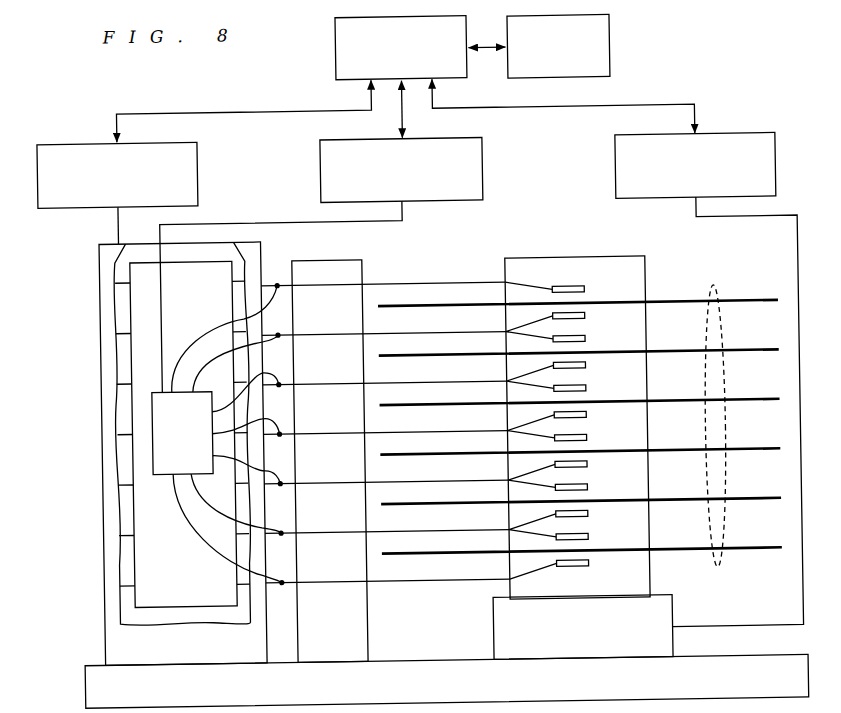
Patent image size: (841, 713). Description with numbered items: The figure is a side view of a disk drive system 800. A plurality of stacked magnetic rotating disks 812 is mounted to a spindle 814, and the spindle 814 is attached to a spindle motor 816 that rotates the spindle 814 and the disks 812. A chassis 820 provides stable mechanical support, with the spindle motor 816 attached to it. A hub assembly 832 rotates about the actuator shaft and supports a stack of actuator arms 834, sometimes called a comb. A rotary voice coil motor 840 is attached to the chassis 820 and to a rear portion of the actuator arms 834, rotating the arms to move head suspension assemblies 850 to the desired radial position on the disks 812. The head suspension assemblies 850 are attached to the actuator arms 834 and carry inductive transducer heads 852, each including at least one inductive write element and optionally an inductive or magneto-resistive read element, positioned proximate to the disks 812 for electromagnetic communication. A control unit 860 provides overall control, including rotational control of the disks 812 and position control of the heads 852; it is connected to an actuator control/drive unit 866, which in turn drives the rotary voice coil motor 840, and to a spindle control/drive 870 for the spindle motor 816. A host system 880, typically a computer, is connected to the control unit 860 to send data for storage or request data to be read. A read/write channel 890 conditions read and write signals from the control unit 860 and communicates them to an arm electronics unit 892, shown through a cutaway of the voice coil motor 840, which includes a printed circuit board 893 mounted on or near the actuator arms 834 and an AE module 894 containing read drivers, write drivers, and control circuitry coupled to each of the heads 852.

The disk drive system 800 is at (79, 261).
The magnetic rotating disks 812 is at (716, 291).
The spindle 814 is at (578, 259).
The spindle motor 816 is at (561, 639).
The chassis 820 is at (422, 698).
The hub assembly 832 is at (349, 627).
The actuator arms 834 is at (447, 325).
The rotary voice coil motor 840 is at (163, 648).
The head suspension assemblies 850 is at (547, 331).
The inductive transducer heads 852 is at (568, 289).
The control unit 860 is at (341, 46).
The actuator control/drive unit 866 is at (81, 138).
The spindle control/drive 870 is at (740, 138).
The host system 880 is at (615, 47).
The read/write channel 890 is at (324, 169).
The arm electronics unit 892 is at (146, 381).
The printed circuit board 893 is at (162, 573).
The AE module 894 is at (164, 438).